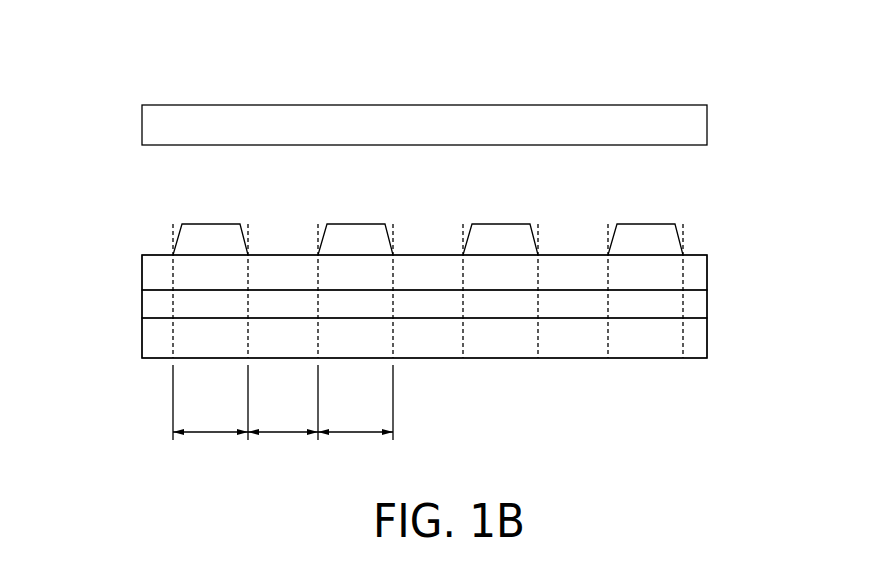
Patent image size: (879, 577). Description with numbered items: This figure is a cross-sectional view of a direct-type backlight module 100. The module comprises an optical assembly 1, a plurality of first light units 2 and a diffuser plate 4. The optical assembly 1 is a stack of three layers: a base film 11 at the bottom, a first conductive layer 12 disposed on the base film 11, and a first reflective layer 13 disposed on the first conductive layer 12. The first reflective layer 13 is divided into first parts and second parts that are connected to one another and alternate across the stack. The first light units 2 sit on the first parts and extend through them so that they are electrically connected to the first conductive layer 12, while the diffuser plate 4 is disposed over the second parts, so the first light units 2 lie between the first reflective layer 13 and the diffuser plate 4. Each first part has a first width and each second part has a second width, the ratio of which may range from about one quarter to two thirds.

The display device 100 is at (786, 52).
The diffuser plate 4 is at (707, 125).
The first light units 2 is at (212, 224).
The optical assembly 1 is at (122, 268).
The first reflective layer 13 is at (707, 278).
The first conductive layer 12 is at (707, 305).
The base film 11 is at (707, 335).